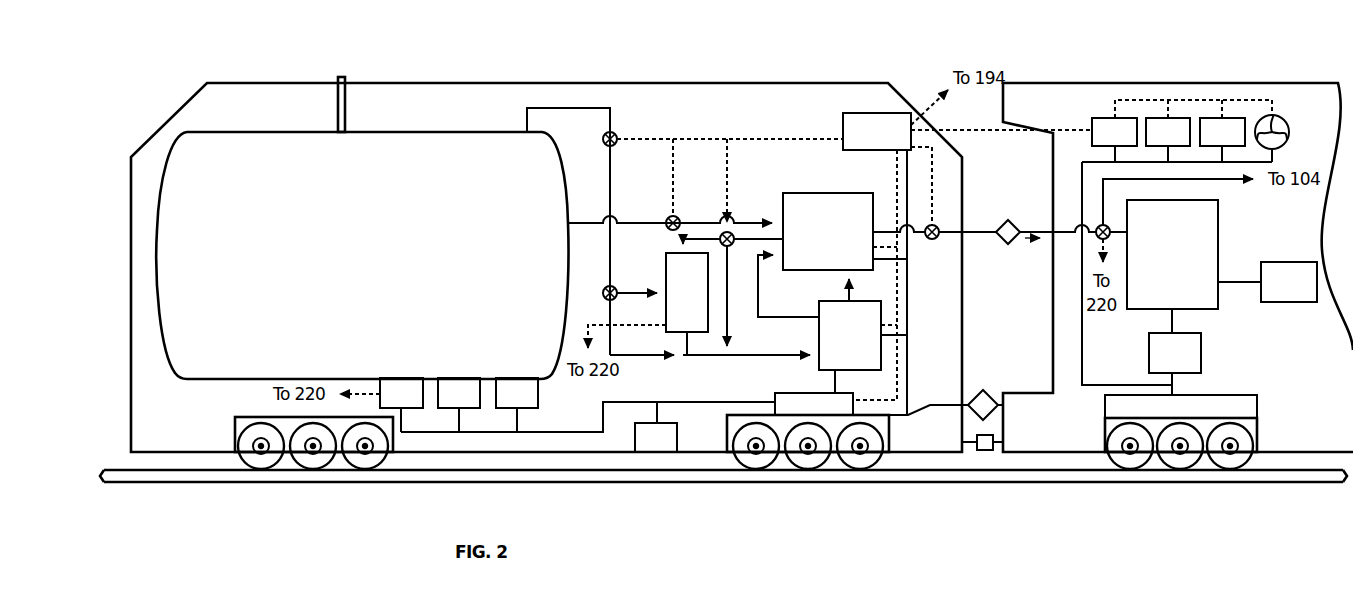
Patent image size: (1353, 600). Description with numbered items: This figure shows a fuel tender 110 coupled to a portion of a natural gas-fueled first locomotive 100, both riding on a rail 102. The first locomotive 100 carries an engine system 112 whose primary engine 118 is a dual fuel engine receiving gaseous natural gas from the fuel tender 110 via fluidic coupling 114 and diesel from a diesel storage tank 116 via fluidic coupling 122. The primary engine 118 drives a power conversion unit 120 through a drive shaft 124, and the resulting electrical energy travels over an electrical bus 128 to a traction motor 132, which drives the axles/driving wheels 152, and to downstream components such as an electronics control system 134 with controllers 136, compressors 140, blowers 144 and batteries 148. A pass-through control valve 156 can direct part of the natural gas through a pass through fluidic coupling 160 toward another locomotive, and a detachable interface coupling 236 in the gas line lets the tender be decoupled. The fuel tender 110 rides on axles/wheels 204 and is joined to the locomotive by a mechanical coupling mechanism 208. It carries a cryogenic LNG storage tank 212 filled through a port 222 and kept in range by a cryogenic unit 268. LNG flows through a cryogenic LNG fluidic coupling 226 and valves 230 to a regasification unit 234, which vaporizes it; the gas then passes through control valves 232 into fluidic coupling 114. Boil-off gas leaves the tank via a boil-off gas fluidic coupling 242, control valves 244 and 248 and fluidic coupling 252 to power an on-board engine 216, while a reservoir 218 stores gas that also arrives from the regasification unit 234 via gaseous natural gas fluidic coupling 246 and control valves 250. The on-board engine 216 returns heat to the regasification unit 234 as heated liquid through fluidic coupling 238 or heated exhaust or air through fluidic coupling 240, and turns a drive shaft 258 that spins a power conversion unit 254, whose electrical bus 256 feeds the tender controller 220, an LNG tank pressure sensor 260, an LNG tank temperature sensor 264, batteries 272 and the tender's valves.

The first locomotive 100 is at (1125, 83).
The rail 102 is at (1012, 474).
The fuel tender 110 is at (250, 83).
The engine system 112 is at (1302, 360).
The fluidic coupling 114 is at (1032, 229).
The diesel storage tank 116 is at (1289, 282).
The primary engine 118 is at (1172, 254).
The power conversion unit 120 is at (1175, 353).
The fluidic coupling 122 is at (1237, 284).
The drive shaft 124 is at (1176, 313).
The electrical bus 128 is at (1176, 392).
The traction motor 132 is at (1181, 406).
The electronics control system 134 is at (1083, 124).
The controllers 136 is at (1114, 132).
The compressors 140 is at (1168, 132).
The blowers 144 is at (1290, 134).
The batteries 148 is at (1222, 132).
The axles/driving wheels 152 is at (1178, 466).
The pass-through control valve 156 is at (1098, 224).
The pass through fluidic coupling 160 is at (1240, 182).
The axles/wheels 204 is at (850, 466).
The mechanical coupling mechanism 208 is at (985, 452).
The LNG storage tank 212 is at (362, 255).
The on-board engine 216 is at (863, 335).
The reservoir 218 is at (648, 304).
The tender controller 220 is at (967, 245).
The port 222 is at (347, 121).
The cryogenic LNG fluidic coupling 226 is at (600, 221).
The valves 230 is at (670, 217).
The control valves 232 is at (933, 240).
The regasification unit 234 is at (828, 231).
The detachable interface coupling 236 is at (1008, 246).
The fluidic coupling 238 is at (770, 314).
The fluidic coupling 240 is at (850, 300).
The boil-off gas fluidic coupling 242 is at (541, 108).
The control valve 244 is at (606, 147).
The gaseous natural gas fluidic coupling 246 is at (740, 223).
The control valve 248 is at (605, 288).
The control valves 250 is at (717, 232).
The fluidic coupling 252 is at (768, 356).
The power conversion unit 254 is at (814, 404).
The electrical bus 256 is at (637, 402).
The drive shaft 258 is at (835, 388).
The LNG tank pressure sensor 260 is at (459, 405).
The LNG tank temperature sensor 264 is at (517, 405).
The cryogenic unit 268 is at (401, 405).
The batteries 272 is at (656, 427).